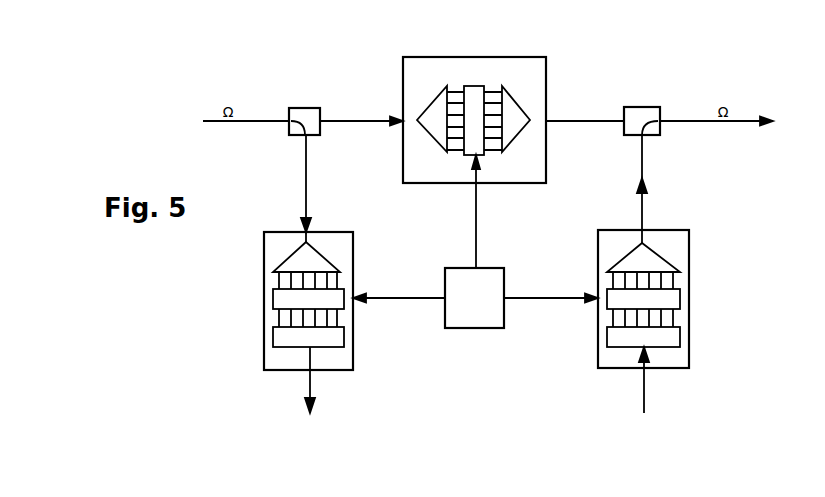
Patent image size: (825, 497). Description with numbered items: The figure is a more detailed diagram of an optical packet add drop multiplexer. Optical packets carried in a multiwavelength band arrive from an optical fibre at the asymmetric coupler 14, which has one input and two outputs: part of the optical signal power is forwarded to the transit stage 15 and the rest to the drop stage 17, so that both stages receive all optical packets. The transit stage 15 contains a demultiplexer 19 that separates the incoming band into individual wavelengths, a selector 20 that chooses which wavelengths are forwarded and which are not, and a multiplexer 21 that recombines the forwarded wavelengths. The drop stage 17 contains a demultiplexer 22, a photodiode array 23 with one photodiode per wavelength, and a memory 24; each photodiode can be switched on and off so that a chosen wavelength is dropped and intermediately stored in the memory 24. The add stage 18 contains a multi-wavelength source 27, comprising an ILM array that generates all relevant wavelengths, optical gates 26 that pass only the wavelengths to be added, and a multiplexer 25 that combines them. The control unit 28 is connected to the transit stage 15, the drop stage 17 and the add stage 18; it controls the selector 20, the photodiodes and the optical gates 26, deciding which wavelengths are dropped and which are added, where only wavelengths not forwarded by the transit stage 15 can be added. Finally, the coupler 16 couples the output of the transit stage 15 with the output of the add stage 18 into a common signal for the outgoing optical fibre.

The asymmetric coupler 14 is at (310, 112).
The transit stage 15 is at (474, 97).
The coupler 16 is at (648, 112).
The drop stage 17 is at (306, 294).
The add stage 18 is at (669, 293).
The demultiplexer 19 is at (432, 123).
The selector 20 is at (478, 148).
The multiplexer 21 is at (517, 115).
The demultiplexer 22 is at (300, 260).
The photodiode array 23 is at (285, 299).
The memory 24 is at (290, 338).
The multiplexer 25 is at (655, 259).
The optical gates 26 is at (665, 299).
The multi-wavelength source 27 is at (673, 338).
The control unit 28 is at (474, 315).